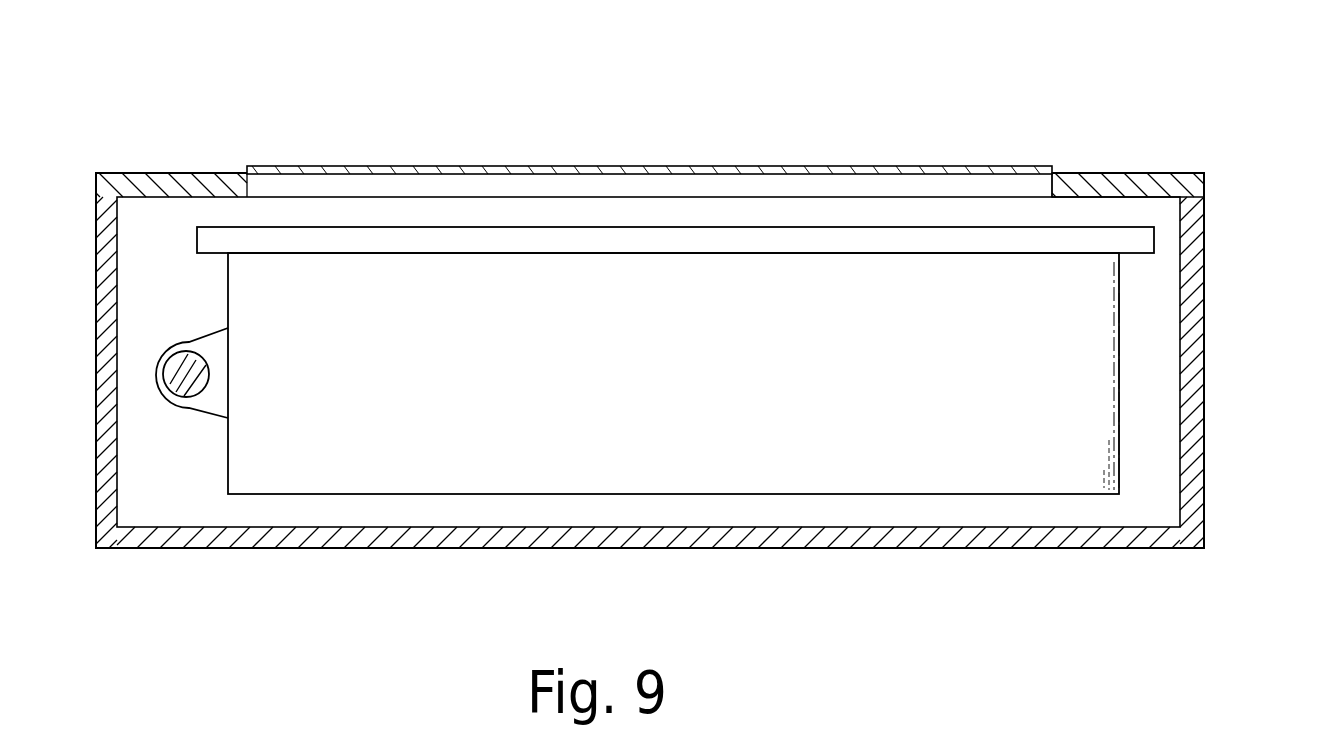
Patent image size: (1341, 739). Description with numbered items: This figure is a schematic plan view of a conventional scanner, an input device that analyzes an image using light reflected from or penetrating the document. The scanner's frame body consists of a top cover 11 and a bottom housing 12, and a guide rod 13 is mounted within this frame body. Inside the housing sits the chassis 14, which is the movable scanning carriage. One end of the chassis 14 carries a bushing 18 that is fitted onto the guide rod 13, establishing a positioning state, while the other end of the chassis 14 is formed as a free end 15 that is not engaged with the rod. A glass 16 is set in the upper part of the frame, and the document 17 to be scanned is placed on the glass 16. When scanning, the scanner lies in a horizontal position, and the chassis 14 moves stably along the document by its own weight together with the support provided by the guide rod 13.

The top cover 11 is at (1168, 178).
The bottom housing 12 is at (1204, 395).
The guide rod 13 is at (163, 382).
The chassis 14 is at (920, 473).
The free end 15 is at (1120, 337).
The glass 16 is at (340, 184).
The document 17 is at (618, 168).
The bushing 18 is at (215, 397).